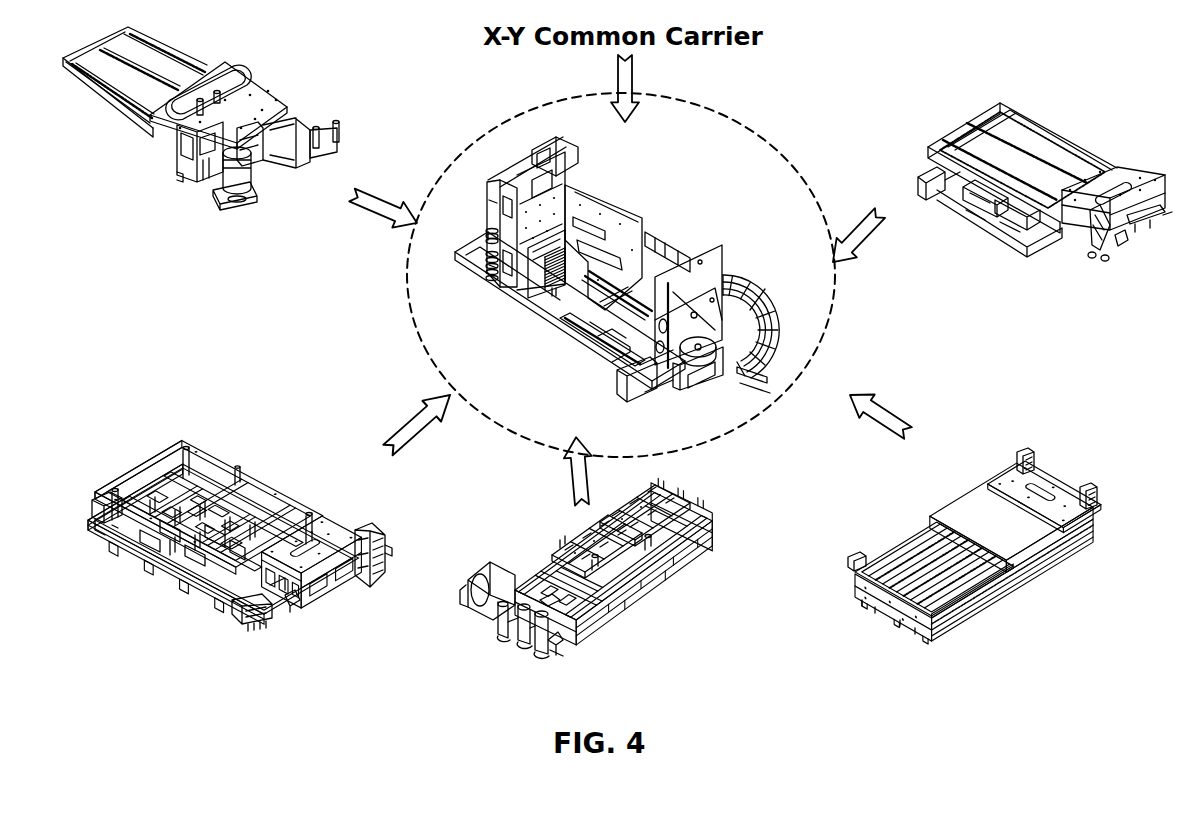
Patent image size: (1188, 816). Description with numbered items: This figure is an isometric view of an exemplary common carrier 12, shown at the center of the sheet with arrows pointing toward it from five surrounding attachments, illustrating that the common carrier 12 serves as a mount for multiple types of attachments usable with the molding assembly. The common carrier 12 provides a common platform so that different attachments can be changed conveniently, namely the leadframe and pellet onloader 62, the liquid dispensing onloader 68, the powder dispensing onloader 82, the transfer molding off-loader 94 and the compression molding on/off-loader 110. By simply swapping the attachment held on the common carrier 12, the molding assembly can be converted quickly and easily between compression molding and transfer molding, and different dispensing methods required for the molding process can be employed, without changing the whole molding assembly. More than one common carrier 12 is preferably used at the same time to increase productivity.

The common carrier 12 is at (757, 123).
The leadframe and pellet onloader 62 is at (237, 443).
The liquid dispensing onloader 68 is at (203, 212).
The powder dispensing onloader 82 is at (969, 232).
The transfer molding off-loader 94 is at (673, 614).
The compression molding on/off-loader 110 is at (1042, 443).